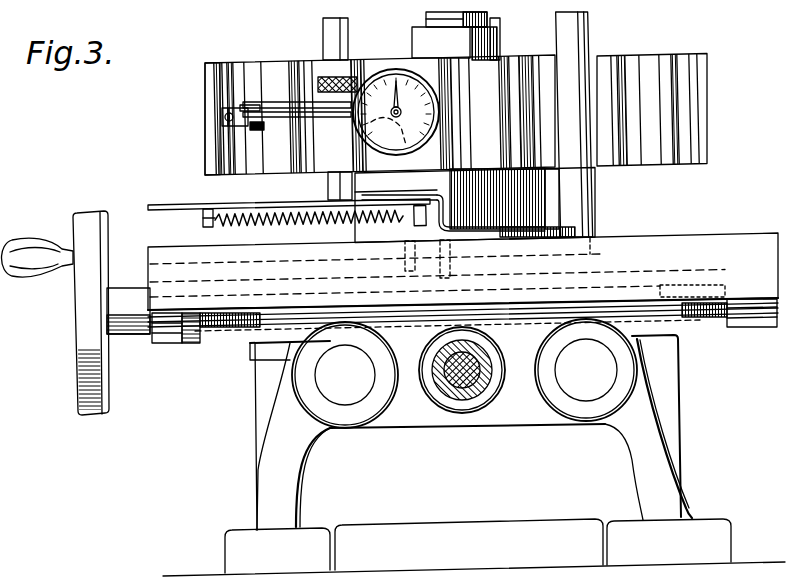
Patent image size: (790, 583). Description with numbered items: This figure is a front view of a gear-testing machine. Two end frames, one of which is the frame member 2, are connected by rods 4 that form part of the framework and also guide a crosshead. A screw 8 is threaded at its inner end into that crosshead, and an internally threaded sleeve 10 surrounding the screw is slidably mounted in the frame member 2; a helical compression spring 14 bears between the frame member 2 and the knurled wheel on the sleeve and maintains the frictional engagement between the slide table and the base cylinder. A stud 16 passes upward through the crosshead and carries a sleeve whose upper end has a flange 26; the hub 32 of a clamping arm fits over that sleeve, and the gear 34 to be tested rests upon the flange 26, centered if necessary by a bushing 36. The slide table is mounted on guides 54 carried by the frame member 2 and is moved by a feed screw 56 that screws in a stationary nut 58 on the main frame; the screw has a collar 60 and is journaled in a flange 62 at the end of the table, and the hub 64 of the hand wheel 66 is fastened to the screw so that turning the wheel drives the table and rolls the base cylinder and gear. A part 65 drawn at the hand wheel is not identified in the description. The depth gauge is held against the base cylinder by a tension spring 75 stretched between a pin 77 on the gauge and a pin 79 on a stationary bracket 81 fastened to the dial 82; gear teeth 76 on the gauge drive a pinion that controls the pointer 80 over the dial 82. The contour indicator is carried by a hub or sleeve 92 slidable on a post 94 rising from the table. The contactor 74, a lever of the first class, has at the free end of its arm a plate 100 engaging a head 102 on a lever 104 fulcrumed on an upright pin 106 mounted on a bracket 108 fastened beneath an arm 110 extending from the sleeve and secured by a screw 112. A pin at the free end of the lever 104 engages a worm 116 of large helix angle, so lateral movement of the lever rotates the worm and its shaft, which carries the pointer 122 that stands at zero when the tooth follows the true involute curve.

The end frame 2 is at (290, 466).
The rods 4 is at (587, 390).
The screw 8 is at (470, 388).
The internally threaded sleeve 10 is at (455, 395).
The helical compression spring 14 is at (500, 390).
The stud 16 is at (428, 21).
The flange 26 is at (518, 181).
The hub 32 is at (520, 206).
The gear 34 is at (681, 62).
The bushing 36 is at (500, 46).
The guides 54 is at (292, 334).
The feed screw 56 is at (228, 330).
The stationary nut 58 is at (345, 375).
The collar 60 is at (192, 345).
The flange 62 is at (166, 345).
The hub 64 is at (121, 298).
The handle 65 is at (18, 250).
The hand wheel 66 is at (88, 352).
The contactor 74 is at (463, 280).
The tension spring 75 is at (290, 227).
The gear teeth 76 is at (494, 252).
The pin 77 is at (420, 225).
The pin 79 is at (203, 221).
The pointer 80 is at (548, 224).
The stationary bracket 81 is at (176, 199).
The dial 82 is at (368, 237).
The hub or sleeve 92 is at (320, 141).
The post 94 is at (323, 35).
The plate 100 is at (240, 118).
The head 102 is at (232, 127).
The lever 104 is at (290, 127).
The upright pin 106 is at (260, 132).
The bracket 108 is at (330, 97).
The arm 110 is at (290, 104).
The screw 112 is at (325, 80).
The worm 116 is at (408, 160).
The pointer 122 is at (401, 91).